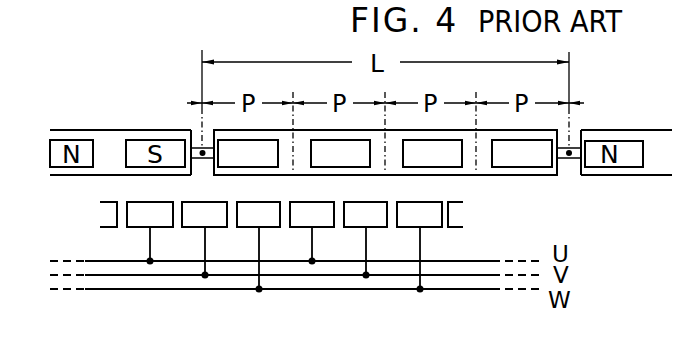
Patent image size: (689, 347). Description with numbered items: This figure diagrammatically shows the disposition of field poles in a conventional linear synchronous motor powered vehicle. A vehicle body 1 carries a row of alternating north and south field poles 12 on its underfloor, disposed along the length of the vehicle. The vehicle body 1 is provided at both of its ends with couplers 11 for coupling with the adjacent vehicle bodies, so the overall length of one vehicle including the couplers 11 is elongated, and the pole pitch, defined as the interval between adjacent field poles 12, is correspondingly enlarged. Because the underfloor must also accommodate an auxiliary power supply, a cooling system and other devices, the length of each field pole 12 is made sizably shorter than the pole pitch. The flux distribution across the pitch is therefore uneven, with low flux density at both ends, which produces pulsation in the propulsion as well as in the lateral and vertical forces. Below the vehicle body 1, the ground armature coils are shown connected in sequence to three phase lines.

The vehicle body 1 is at (504, 176).
The coupler 11 is at (569, 160).
The field pole 12 is at (264, 168).